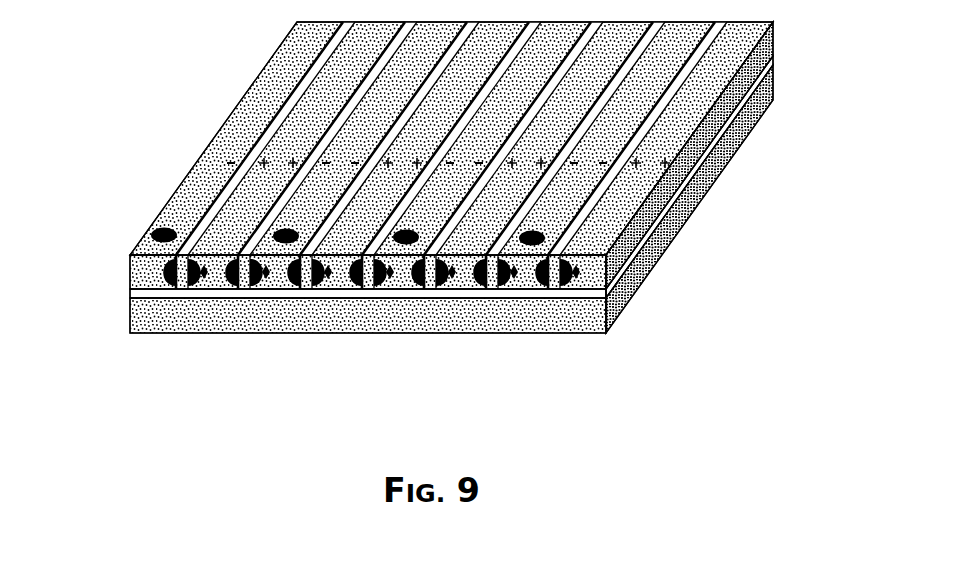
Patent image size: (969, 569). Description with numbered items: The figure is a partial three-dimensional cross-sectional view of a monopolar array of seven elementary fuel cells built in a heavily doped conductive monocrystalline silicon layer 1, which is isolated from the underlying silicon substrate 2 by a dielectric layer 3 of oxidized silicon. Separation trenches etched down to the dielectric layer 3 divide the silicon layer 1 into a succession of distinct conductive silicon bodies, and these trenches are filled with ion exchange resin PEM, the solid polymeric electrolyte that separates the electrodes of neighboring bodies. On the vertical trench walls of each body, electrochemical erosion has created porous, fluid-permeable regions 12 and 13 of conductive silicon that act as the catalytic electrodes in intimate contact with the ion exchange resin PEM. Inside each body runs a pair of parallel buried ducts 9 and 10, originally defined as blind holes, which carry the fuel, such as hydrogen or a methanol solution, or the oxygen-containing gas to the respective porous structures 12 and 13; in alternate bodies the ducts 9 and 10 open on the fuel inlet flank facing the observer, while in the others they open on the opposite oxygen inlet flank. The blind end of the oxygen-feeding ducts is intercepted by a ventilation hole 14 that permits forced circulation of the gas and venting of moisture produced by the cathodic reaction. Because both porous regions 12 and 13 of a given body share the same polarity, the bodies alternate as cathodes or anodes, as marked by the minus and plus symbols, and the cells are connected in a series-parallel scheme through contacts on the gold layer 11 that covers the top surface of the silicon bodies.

The conductive monocrystalline silicon layer 1 is at (712, 140).
The silicon substrate 2 is at (680, 227).
The dielectric layer 3 is at (690, 175).
The buried duct 9 is at (206, 272).
The buried duct 10 is at (225, 272).
The gold layer 11 is at (271, 88).
The porous conductive silicon region 12 is at (197, 275).
The porous conductive silicon region 13 is at (235, 268).
The ventilation hole 14 is at (156, 228).
The ion exchange resin PEM is at (187, 257).